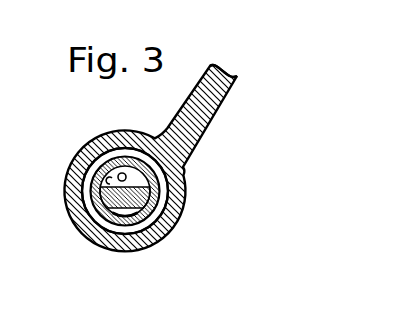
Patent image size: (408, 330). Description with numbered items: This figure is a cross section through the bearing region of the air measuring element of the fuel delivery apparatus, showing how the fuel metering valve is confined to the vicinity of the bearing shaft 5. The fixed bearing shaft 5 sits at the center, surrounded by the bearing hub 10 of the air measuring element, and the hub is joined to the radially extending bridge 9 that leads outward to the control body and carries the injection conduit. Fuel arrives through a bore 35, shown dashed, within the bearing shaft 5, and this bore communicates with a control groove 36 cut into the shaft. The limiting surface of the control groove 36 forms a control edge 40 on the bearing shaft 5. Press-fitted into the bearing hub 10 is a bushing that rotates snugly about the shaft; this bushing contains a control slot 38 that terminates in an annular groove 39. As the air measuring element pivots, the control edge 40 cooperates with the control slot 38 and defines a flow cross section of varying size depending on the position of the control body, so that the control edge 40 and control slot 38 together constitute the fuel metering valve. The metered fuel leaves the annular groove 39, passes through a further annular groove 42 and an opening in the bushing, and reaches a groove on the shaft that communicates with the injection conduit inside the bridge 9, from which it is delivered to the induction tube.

The bearing shaft 5 is at (163, 233).
The bridge 9 is at (218, 97).
The bearing hub 10 is at (78, 165).
The bore 35 is at (122, 173).
The control groove 36 is at (109, 178).
The control slot 38 is at (114, 218).
The annular groove 39 is at (160, 189).
The control edge 40 is at (112, 217).
The annular groove 42 is at (90, 199).